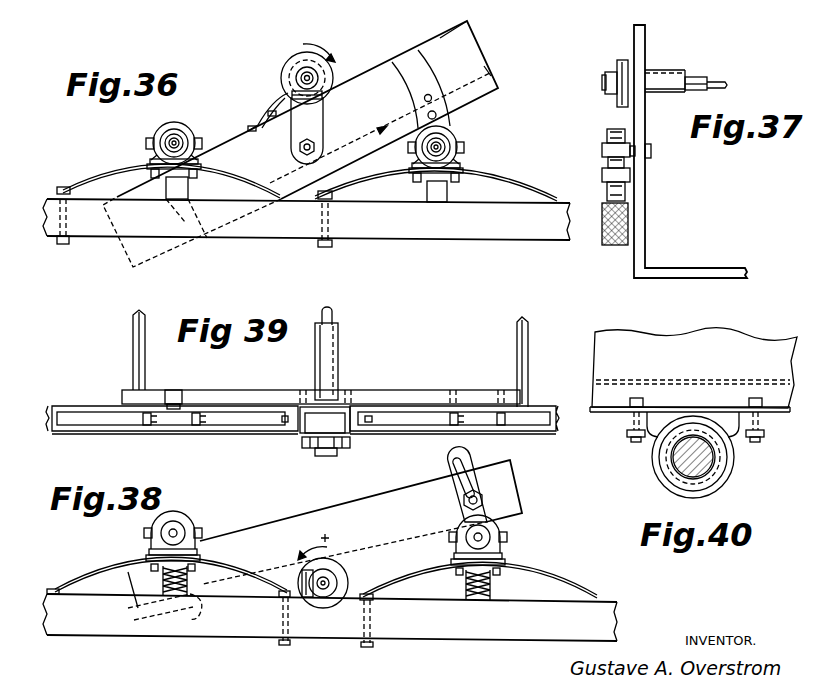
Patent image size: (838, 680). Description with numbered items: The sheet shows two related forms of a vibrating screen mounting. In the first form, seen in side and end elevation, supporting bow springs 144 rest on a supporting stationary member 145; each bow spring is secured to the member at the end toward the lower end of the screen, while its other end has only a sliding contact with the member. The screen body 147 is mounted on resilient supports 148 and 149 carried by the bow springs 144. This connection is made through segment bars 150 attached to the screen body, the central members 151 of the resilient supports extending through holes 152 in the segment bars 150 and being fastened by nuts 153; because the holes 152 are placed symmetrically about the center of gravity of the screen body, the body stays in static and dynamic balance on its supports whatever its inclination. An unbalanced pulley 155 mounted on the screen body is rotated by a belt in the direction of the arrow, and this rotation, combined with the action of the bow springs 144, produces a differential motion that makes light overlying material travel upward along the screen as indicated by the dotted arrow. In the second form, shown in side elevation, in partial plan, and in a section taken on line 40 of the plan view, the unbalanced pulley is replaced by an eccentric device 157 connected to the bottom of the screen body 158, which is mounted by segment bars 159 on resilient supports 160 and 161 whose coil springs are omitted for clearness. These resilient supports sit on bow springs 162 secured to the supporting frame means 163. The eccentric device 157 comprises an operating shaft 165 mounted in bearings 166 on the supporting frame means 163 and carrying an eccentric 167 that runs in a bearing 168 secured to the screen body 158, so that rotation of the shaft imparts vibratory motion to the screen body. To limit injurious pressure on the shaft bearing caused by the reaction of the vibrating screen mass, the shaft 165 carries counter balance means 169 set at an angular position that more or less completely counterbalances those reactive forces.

In FIG. 39, the section line 40— 40 is at (273, 403).
In FIG. 36, the bow springs 144 is at (117, 169).
In FIG. 36, the supporting stationary member 145 is at (306, 219).
In FIG. 36, the screen body 147 is at (300, 144).
In FIG. 37, the screen body 147 is at (646, 51).
In FIG. 36, the resilient support 148 is at (159, 133).
In FIG. 36, the resilient support 149 is at (457, 137).
In FIG. 36, the segment bars 150 is at (464, 48).
In FIG. 37, the central members 151 is at (651, 149).
In FIG. 36, the holes 152 is at (432, 94).
In FIG. 37, the nuts 153 is at (648, 161).
In FIG. 36, the unbalanced pulley 155 is at (334, 67).
In FIG. 37, the unbalanced pulley 155 is at (616, 67).
In FIG. 38, the eccentric device 157 is at (323, 608).
In FIG. 39, the screen body 158 is at (517, 358).
In FIG. 38, the screen body 158 is at (380, 502).
In FIG. 40, the screen body 158 is at (693, 385).
In FIG. 38, the segment bars 159 is at (481, 482).
In FIG. 39, the resilient support 160 is at (160, 425).
In FIG. 38, the resilient support 160 is at (151, 540).
In FIG. 39, the resilient support 161 is at (484, 423).
In FIG. 38, the resilient support 161 is at (507, 541).
In FIG. 38, the bow springs 162 is at (247, 564).
In FIG. 38, the supporting frame means 163 is at (330, 618).
In FIG. 38, the operating shaft 165 is at (335, 583).
In FIG. 39, the bearings 166 is at (313, 425).
In FIG. 40, the bearings 166 is at (680, 463).
In FIG. 39, the eccentric 167 is at (339, 398).
In FIG. 40, the eccentric 167 is at (715, 452).
In FIG. 39, the bearing 168 is at (315, 398).
In FIG. 40, the bearing 168 is at (720, 470).
In FIG. 38, the counter balance means 169 is at (298, 618).